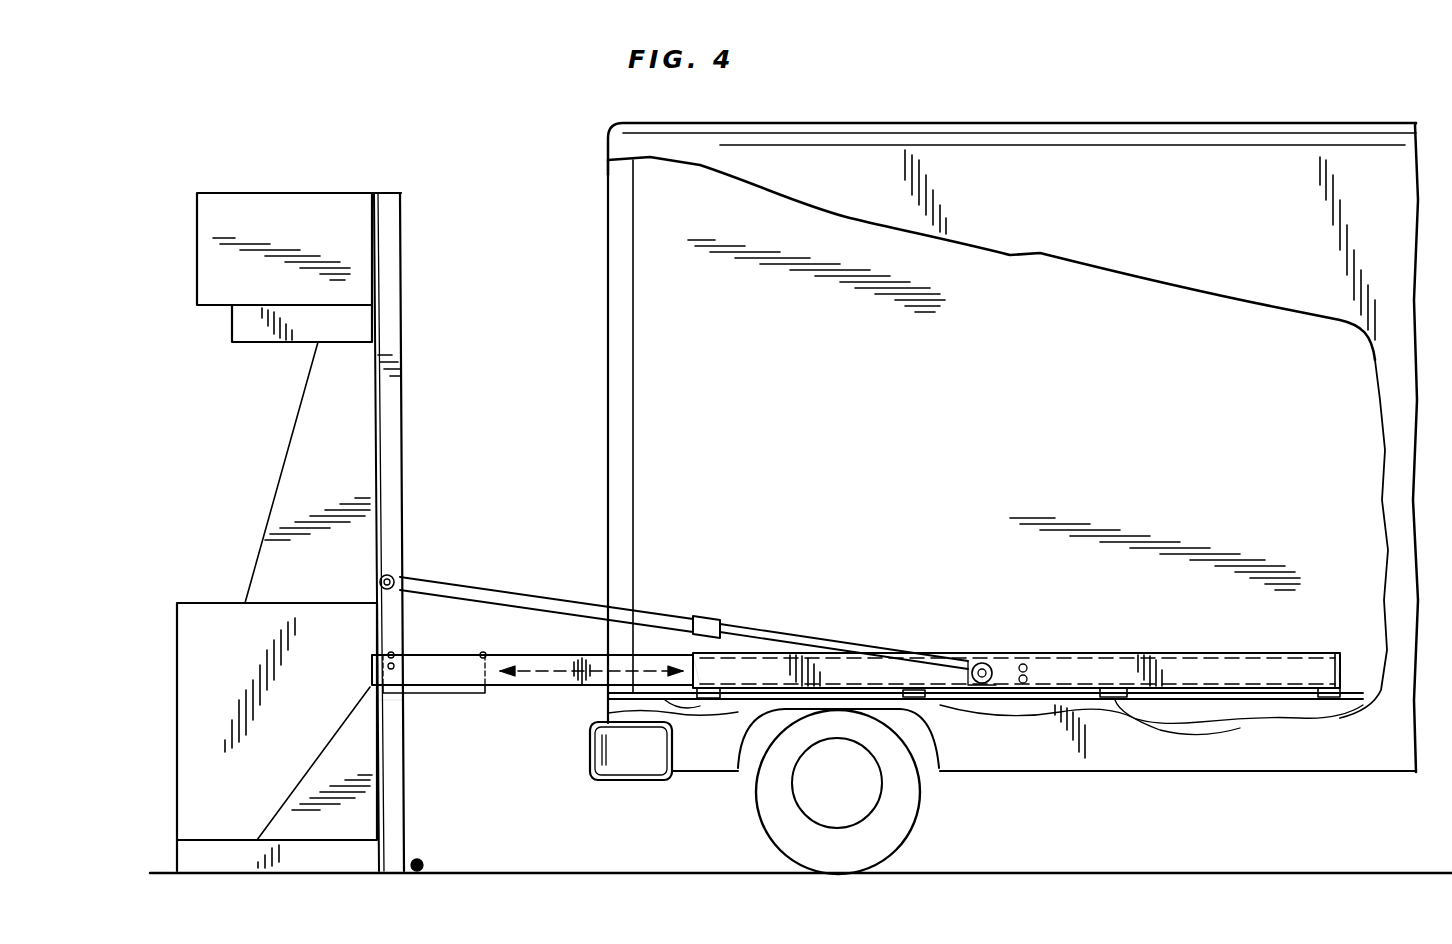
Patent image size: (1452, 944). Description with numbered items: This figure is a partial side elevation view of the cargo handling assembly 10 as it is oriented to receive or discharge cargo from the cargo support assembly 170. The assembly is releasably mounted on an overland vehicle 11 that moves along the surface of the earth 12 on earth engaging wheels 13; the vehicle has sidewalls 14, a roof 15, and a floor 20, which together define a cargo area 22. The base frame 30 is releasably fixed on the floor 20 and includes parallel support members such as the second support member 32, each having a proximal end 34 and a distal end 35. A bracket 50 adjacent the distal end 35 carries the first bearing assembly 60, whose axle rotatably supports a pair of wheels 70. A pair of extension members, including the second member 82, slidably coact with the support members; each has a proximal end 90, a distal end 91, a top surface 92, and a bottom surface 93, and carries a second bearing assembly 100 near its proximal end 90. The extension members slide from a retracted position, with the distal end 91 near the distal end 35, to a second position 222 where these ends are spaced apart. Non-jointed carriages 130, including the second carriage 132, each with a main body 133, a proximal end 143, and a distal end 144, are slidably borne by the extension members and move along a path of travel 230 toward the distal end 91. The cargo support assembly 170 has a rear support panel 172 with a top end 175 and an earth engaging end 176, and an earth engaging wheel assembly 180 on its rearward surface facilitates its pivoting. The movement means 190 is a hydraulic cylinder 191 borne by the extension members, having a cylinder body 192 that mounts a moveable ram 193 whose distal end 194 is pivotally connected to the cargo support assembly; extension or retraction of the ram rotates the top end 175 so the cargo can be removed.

The cargo handling assembly 10 is at (1093, 628).
The overland vehicle 11 is at (1238, 100).
The surface of the earth 12 is at (1300, 872).
The earth engaging wheels 13 is at (918, 800).
The sidewalls 14 is at (1242, 232).
The roof 15 is at (1085, 122).
The floor 20 is at (1360, 640).
The cargo area 22 is at (1048, 285).
The base frame 30 is at (1250, 645).
The second support member 32 is at (1150, 654).
The proximal end 34 is at (1325, 652).
The distal end 35 is at (698, 658).
The bracket 50 is at (1330, 705).
The first bearing assembly 60 is at (720, 712).
The wheels 70 is at (708, 700).
The second member 82 is at (550, 705).
The proximal end 90 is at (1005, 660).
The distal end 91 is at (370, 668).
The top surface 92 is at (522, 654).
The bottom surface 93 is at (583, 700).
The second bearing assembly 100 is at (1032, 650).
The carriages 130 is at (440, 700).
The second carriage 132 is at (416, 653).
The main body 133 is at (462, 694).
The proximal end 143 is at (490, 607).
The distal end 144 is at (376, 652).
The cargo support assembly 170 is at (440, 270).
The rear support panel 172 is at (403, 424).
The top end 175 is at (402, 198).
The earth engaging end 176 is at (403, 812).
The earth engaging wheel assembly 180 is at (423, 862).
The movement means 190 is at (768, 612).
The hydraulic cylinder 191 is at (818, 642).
The cylinder body 192 is at (790, 630).
The moveable ram 193 is at (655, 632).
The distal end 194 is at (411, 577).
The second position 222 is at (372, 686).
The path of travel 230 is at (552, 665).